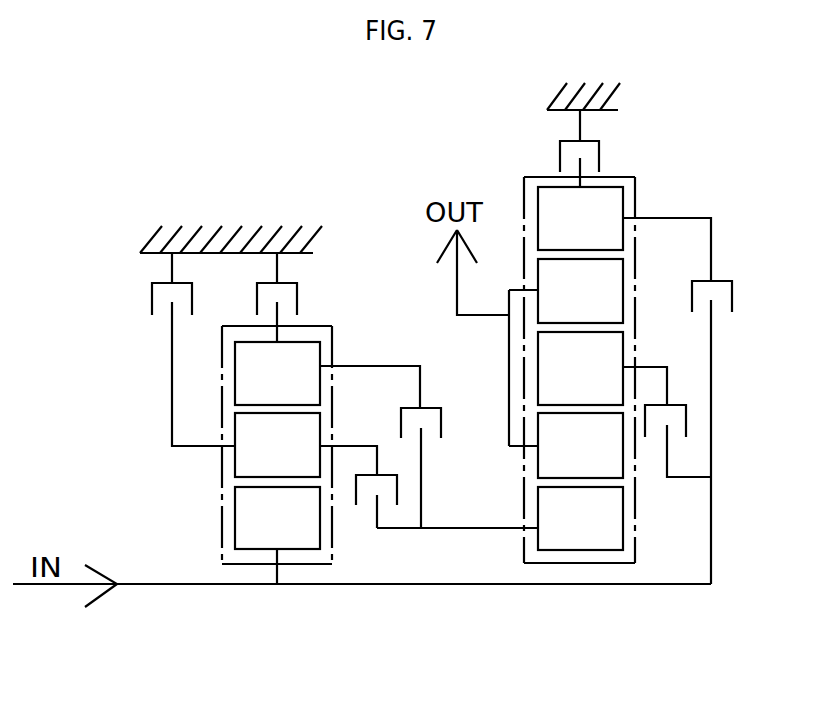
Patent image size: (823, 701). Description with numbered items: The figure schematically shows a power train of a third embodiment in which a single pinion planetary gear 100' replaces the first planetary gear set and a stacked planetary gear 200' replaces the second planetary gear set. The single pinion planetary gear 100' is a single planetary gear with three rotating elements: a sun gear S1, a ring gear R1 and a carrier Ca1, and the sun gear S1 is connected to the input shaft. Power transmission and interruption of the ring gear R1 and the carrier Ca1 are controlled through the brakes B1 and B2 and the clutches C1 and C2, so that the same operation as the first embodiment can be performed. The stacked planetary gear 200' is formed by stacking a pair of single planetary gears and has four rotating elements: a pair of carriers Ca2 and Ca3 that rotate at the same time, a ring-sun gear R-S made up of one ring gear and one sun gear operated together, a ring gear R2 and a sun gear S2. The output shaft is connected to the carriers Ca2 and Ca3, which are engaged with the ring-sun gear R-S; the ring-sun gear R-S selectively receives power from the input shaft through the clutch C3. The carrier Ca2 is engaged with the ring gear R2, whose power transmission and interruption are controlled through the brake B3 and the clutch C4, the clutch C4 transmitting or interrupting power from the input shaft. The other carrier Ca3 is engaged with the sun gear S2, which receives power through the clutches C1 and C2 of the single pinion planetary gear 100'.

The brake B1 is at (163, 349).
The brake B2 is at (303, 297).
The brake B3 is at (606, 148).
The clutch C1 is at (370, 540).
The clutch C2 is at (429, 445).
The clutch C3 is at (686, 422).
The clutch C4 is at (707, 401).
The single pinion planetary gear 100' is at (227, 445).
The stacked planetary gear 200' is at (632, 363).
The ring gear R1 is at (277, 373).
The carrier Ca1 is at (277, 445).
The sun gear S1 is at (277, 535).
The ring gear R2 is at (580, 218).
The carrier Ca2 is at (580, 291).
The ring-sun gear R-S is at (580, 368).
The carrier Ca3 is at (580, 445).
The sun gear S2 is at (580, 518).